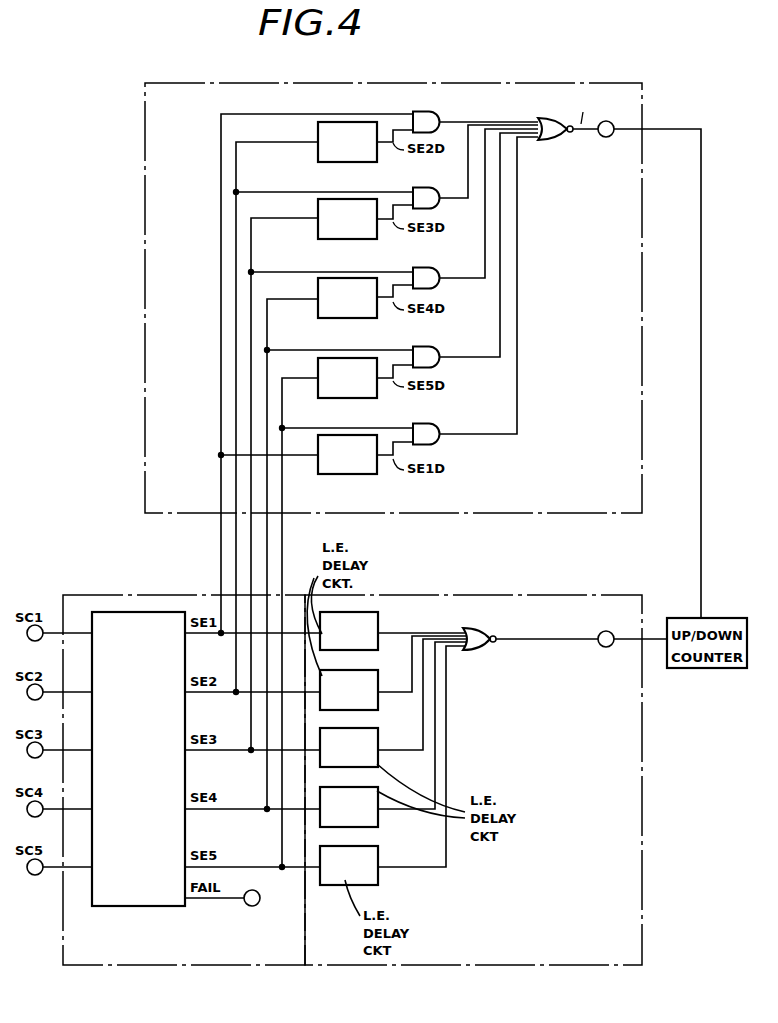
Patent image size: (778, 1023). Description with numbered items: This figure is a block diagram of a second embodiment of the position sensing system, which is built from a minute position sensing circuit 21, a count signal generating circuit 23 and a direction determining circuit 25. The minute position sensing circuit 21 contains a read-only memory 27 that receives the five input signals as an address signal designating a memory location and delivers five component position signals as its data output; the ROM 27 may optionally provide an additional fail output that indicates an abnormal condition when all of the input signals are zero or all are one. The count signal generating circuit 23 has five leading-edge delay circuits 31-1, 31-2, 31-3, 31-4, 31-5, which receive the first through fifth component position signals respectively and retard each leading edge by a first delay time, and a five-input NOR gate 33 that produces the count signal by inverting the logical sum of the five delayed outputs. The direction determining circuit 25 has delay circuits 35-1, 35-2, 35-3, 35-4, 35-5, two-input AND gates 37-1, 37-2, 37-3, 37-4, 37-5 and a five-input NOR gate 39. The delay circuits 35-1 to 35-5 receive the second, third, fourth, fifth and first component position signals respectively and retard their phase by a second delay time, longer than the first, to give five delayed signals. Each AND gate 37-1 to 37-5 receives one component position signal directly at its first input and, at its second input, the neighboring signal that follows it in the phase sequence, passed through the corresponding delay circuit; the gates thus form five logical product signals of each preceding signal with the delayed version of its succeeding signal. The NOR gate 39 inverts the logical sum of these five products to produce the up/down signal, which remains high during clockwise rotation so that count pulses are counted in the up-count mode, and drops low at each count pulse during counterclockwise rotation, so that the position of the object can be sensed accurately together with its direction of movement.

The minute position sensing circuit 21 is at (128, 593).
The count signal generating circuit 23 is at (568, 591).
The direction determining circuit 25 is at (488, 515).
The read-only memory (ROM) 27 is at (173, 908).
The leading-edge delay circuit 31-1 is at (381, 620).
The leading-edge delay circuit 31-2 is at (381, 705).
The leading-edge delay circuit 31-3 is at (376, 758).
The leading-edge delay circuit 31-4 is at (381, 818).
The leading-edge delay circuit 31-5 is at (381, 877).
The five-input NOR gate 33 is at (485, 652).
The delay circuit 35-1 is at (335, 165).
The delay circuit 35-2 is at (335, 242).
The delay circuit 35-3 is at (335, 321).
The delay circuit 35-4 is at (335, 401).
The delay circuit 35-5 is at (335, 477).
The two-input AND gate 37-1 is at (423, 111).
The two-input AND gate 37-2 is at (423, 187).
The two-input AND gate 37-3 is at (423, 267).
The two-input AND gate 37-4 is at (423, 346).
The two-input AND gate 37-5 is at (423, 423).
The five-input NOR gate 39 is at (556, 142).